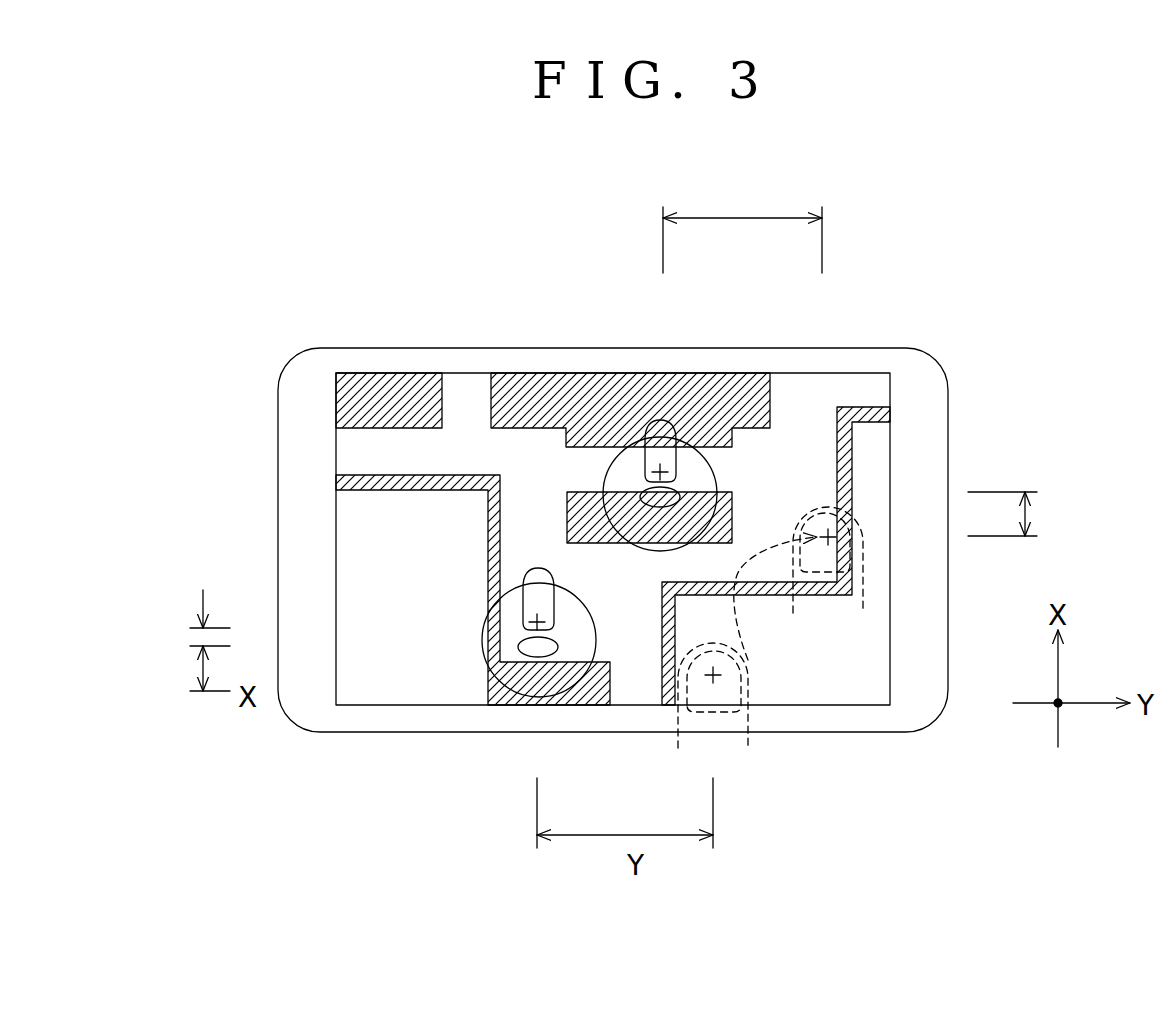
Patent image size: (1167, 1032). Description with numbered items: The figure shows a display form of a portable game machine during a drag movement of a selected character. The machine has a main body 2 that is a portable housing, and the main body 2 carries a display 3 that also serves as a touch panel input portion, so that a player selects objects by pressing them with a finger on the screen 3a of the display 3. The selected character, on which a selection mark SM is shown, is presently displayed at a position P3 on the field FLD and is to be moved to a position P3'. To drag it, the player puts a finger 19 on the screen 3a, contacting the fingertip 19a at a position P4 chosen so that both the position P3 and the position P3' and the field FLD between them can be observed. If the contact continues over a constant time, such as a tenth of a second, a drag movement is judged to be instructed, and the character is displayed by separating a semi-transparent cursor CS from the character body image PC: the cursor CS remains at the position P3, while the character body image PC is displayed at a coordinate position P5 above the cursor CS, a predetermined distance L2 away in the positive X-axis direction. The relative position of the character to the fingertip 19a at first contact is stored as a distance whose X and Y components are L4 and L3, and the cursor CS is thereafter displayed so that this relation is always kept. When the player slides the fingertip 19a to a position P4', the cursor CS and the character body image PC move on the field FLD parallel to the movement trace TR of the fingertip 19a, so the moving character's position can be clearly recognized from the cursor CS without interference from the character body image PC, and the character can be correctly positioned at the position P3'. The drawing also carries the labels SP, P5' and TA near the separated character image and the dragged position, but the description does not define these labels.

The main body 2 is at (948, 668).
The display 3 is at (888, 688).
The screen 3a is at (827, 688).
The field FLD is at (825, 398).
The selection mark SM is at (597, 483).
The sensor pad SP is at (638, 483).
The cursor CS is at (680, 498).
The character body image PC is at (653, 428).
The position P3 is at (600, 645).
The position P3' is at (721, 473).
The position P4 is at (746, 735).
The position P4' is at (809, 488).
The coordinate position P5 is at (482, 581).
The position P5' is at (687, 392).
The finger 19 is at (862, 598).
The fingertip 19a is at (857, 523).
The movement trace TR is at (745, 628).
The target area TA is at (580, 564).
The predetermined distance L2 is at (195, 604).
The distance L3 is at (679, 512).
The distance L4 is at (630, 591).